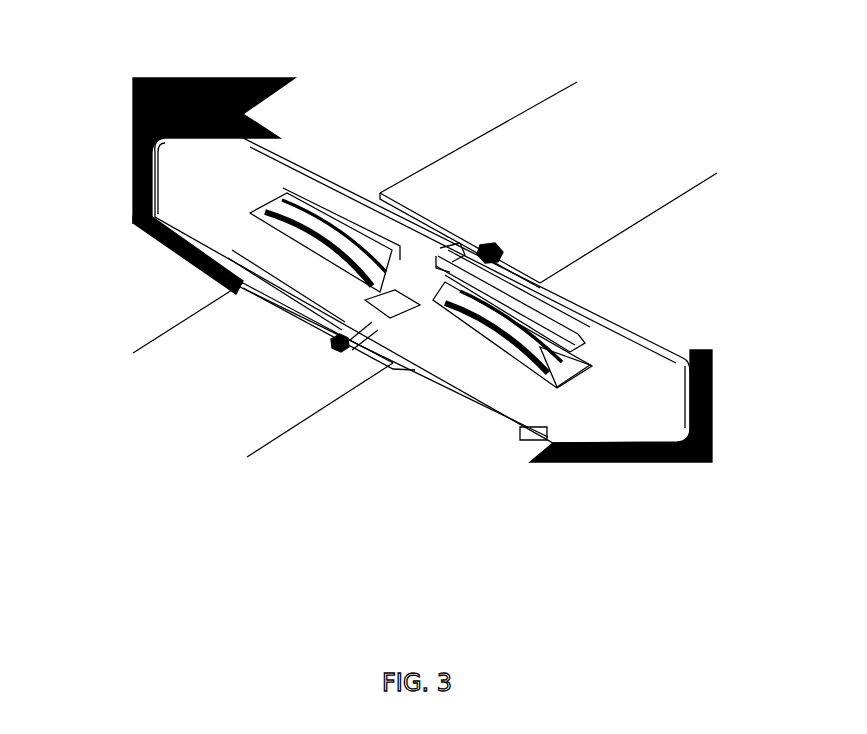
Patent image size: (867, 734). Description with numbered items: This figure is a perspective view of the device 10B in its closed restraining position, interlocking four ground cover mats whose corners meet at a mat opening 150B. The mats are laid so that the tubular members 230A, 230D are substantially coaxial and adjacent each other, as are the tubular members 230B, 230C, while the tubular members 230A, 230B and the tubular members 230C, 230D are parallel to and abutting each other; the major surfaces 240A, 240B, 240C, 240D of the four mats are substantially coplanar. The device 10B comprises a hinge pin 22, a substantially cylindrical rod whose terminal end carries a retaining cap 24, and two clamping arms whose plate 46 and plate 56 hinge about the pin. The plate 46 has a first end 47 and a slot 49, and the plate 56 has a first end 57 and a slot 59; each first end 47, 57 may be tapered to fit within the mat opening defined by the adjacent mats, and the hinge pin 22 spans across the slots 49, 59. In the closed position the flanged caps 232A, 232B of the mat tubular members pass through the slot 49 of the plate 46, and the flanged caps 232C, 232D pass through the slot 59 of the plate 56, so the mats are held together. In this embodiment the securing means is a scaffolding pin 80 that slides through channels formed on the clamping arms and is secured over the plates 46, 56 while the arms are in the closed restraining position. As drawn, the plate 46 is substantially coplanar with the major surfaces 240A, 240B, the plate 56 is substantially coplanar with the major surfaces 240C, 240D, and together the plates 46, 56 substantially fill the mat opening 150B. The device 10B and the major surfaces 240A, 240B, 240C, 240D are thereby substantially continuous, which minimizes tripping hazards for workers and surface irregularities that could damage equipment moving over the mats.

The device 10B is at (674, 309).
The hinge pin 22 is at (400, 295).
The retaining cap 24 is at (330, 342).
The plate 46 is at (198, 258).
The first end 47 is at (158, 159).
The slot 49 is at (263, 198).
The plate 56 is at (520, 405).
The first end 57 is at (662, 440).
The slot 59 is at (578, 374).
The scaffolding pin 80 is at (540, 282).
The mat opening 150B is at (262, 129).
The tubular member 230A is at (600, 127).
The tubular member 230B is at (150, 404).
The tubular member 230C is at (222, 449).
The tubular member 230D is at (700, 179).
The flanged cap 232A is at (337, 223).
The flanged cap 232B is at (277, 235).
The flanged cap 232C is at (457, 330).
The flanged cap 232D is at (597, 322).
The major surface 240A is at (445, 70).
The major surface 240B is at (87, 284).
The major surface 240C is at (397, 527).
The major surface 240D is at (742, 261).